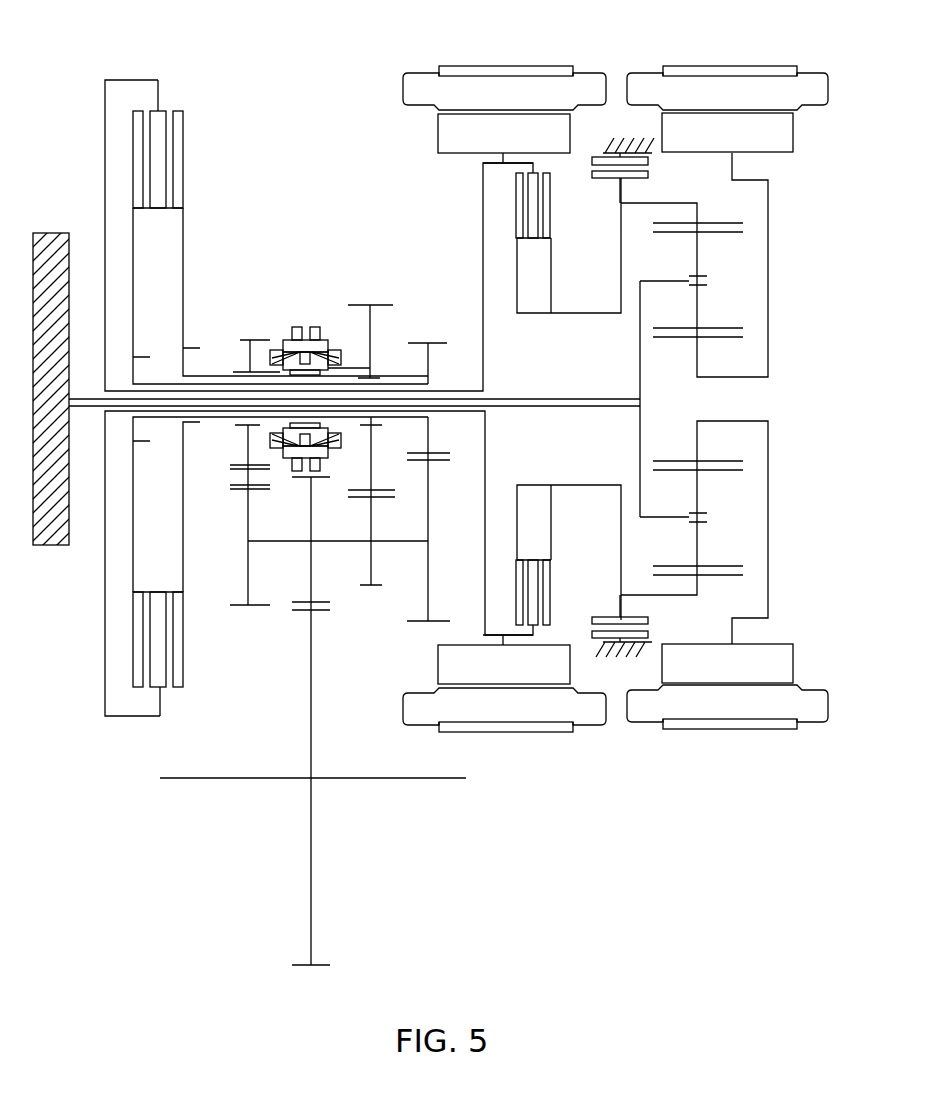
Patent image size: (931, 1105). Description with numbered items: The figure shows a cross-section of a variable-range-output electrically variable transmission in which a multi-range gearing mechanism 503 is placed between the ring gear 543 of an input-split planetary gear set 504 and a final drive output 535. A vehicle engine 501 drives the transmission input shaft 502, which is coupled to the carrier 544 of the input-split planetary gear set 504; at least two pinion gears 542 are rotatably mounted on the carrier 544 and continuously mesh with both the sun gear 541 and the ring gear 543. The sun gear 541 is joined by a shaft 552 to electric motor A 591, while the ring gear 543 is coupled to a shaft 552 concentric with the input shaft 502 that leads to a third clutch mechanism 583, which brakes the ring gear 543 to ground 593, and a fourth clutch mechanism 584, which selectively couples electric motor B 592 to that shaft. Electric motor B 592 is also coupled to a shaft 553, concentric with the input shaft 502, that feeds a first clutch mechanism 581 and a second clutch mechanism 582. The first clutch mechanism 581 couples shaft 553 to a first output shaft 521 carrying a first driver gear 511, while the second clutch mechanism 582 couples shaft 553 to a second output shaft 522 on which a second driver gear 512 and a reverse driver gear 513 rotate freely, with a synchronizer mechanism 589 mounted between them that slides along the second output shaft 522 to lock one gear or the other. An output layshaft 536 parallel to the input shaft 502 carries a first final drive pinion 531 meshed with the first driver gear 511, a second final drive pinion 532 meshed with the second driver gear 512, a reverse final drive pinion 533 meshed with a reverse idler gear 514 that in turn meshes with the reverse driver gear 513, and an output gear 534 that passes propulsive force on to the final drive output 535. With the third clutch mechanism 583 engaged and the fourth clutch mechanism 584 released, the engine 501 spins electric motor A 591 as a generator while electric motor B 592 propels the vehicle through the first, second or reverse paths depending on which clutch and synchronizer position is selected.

The vehicle engine 501 is at (48, 232).
The transmission input shaft 502 is at (101, 408).
The multi-range gearing mechanism 503 is at (315, 312).
The input-split planetary gear set 504 is at (758, 394).
The first driver gear 511 is at (430, 366).
The second driver gear 512 is at (372, 330).
The reverse driver gear 513 is at (245, 350).
The reverse idler gear 514 is at (242, 476).
The first output shaft 521 is at (150, 384).
The second output shaft 522 is at (193, 376).
The first final drive pinion 531 is at (430, 585).
The second final drive pinion 532 is at (375, 556).
The reverse final drive pinion 533 is at (246, 590).
The output gear 534 is at (315, 588).
The final drive output 535 is at (311, 837).
The output layshaft 536 is at (328, 542).
The sun gear 541 is at (725, 338).
The pinion gears 542 is at (698, 312).
The ring gear 543 is at (720, 222).
The carrier 544 is at (640, 375).
The shaft 552 is at (600, 313).
The shaft 553 is at (105, 140).
The first clutch mechanism 581 is at (133, 100).
The second clutch mechanism 582 is at (180, 102).
The third clutch mechanism 583 is at (655, 170).
The fourth clutch mechanism 584 is at (545, 245).
The synchronizer mechanism 589 is at (308, 356).
The electric motor A 591 is at (793, 135).
The electric motor B 592 is at (438, 132).
The ground 593 is at (613, 128).